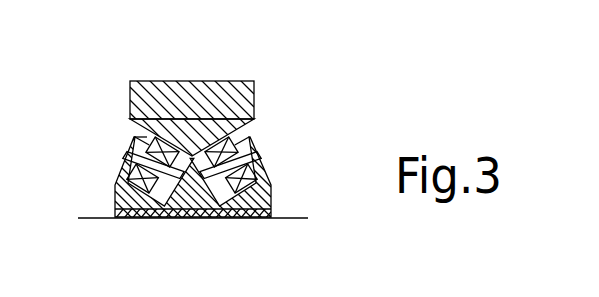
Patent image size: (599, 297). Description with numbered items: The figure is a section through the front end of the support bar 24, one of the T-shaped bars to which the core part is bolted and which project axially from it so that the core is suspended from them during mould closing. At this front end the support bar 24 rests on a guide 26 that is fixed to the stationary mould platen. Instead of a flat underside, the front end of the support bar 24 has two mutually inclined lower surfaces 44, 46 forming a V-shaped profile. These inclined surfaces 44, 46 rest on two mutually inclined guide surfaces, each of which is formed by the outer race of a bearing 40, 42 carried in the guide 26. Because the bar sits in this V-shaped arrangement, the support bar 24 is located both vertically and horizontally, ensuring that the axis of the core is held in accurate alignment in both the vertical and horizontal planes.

The support bar 24 is at (243, 93).
The guide 26 is at (282, 197).
The bearing 40 is at (260, 172).
The bearing 42 is at (128, 160).
The inclined lower surface 44 is at (254, 124).
The inclined lower surface 46 is at (132, 133).